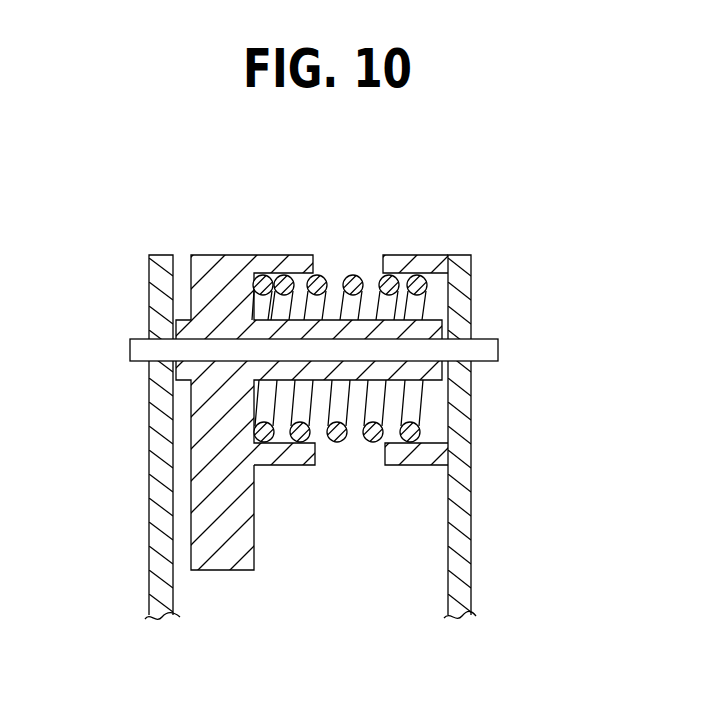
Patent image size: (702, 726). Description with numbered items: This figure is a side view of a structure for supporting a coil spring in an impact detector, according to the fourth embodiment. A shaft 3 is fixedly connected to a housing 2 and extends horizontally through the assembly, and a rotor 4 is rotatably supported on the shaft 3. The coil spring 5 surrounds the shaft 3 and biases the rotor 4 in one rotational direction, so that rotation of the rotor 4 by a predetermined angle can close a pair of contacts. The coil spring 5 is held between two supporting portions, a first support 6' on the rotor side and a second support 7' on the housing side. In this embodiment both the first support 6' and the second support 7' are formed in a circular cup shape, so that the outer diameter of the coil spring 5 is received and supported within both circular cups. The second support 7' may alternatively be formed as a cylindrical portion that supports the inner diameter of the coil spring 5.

The housing 2 is at (155, 580).
The shaft 3 is at (130, 350).
The rotor 4 is at (215, 268).
The coil spring 5 is at (353, 275).
The first support 6' is at (348, 330).
The second support 7' is at (483, 333).